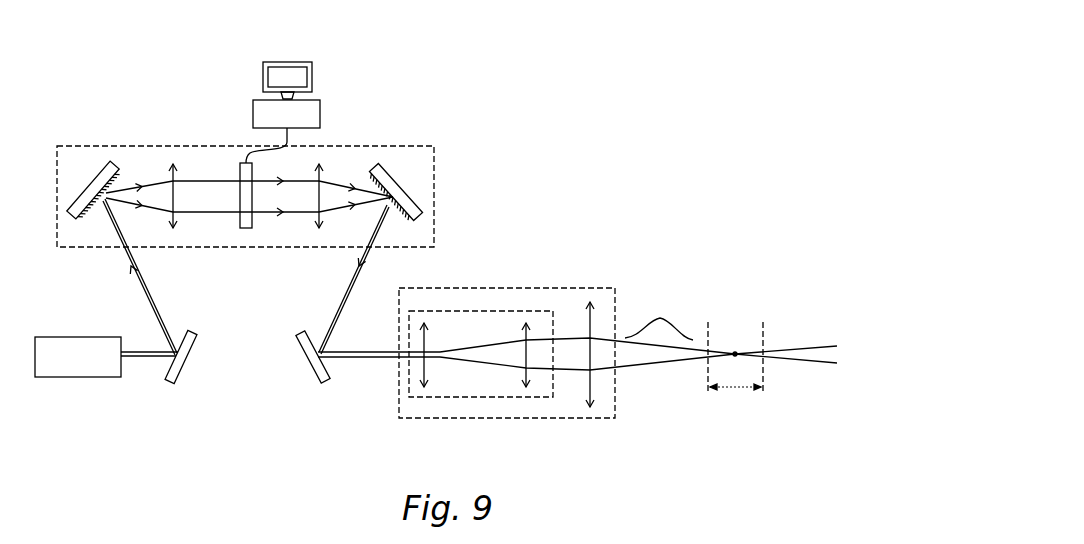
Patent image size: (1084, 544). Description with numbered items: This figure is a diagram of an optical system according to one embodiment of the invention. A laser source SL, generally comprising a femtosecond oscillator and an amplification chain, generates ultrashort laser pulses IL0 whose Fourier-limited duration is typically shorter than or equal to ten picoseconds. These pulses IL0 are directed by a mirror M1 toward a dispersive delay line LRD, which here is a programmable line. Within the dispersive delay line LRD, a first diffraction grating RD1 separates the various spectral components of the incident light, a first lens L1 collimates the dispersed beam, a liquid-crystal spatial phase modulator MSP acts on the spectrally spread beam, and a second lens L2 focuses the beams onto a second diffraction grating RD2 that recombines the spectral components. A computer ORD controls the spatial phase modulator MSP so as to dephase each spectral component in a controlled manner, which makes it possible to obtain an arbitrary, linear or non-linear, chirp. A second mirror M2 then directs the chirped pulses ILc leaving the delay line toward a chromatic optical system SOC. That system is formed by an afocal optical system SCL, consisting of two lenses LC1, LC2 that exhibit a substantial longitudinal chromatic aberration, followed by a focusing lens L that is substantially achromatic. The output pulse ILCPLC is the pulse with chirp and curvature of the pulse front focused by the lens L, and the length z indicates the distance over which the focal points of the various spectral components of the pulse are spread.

The laser source SL is at (80, 380).
The mirror M1 is at (173, 385).
The second mirror M2 is at (313, 372).
The pulses IL0 is at (158, 301).
The pulses with chirp ILc is at (347, 318).
The first diffraction grating RD1 is at (110, 183).
The second diffraction grating RD2 is at (397, 170).
The first lens L1 is at (170, 180).
The second lens L2 is at (330, 177).
The liquid-crystal spatial phase modulator MSP is at (247, 230).
The computer ORD is at (292, 60).
The dispersive delay line LRD is at (436, 183).
The chromatic optical system SOC is at (550, 289).
The afocal optical system SCL is at (472, 311).
The lens LC1 is at (433, 389).
The lens LC2 is at (535, 389).
The focusing lens L is at (592, 326).
The pulse with chirp and curvature of the pulse front ILCPLC is at (700, 283).
The length over which the focal points are spread z is at (735, 370).